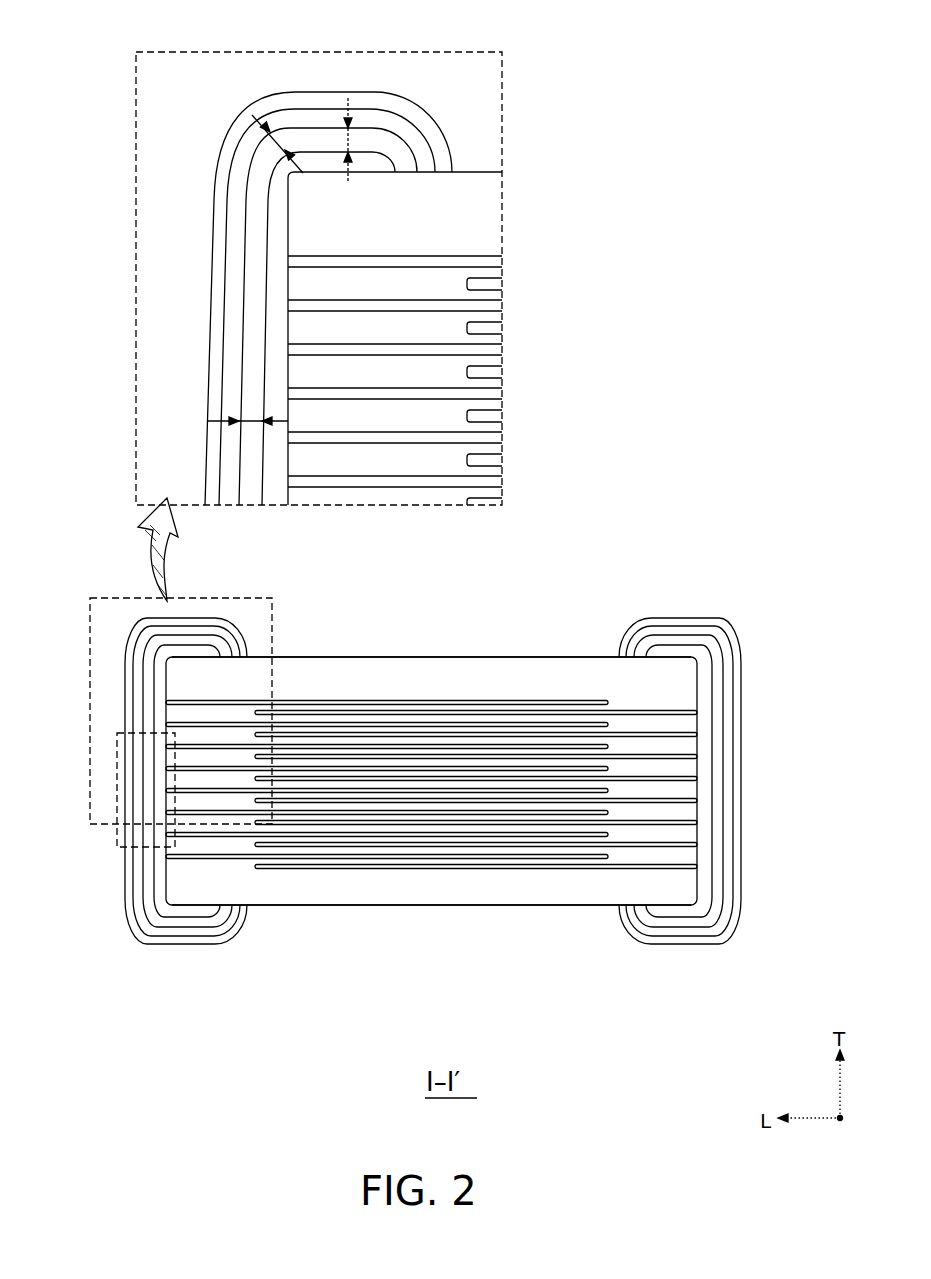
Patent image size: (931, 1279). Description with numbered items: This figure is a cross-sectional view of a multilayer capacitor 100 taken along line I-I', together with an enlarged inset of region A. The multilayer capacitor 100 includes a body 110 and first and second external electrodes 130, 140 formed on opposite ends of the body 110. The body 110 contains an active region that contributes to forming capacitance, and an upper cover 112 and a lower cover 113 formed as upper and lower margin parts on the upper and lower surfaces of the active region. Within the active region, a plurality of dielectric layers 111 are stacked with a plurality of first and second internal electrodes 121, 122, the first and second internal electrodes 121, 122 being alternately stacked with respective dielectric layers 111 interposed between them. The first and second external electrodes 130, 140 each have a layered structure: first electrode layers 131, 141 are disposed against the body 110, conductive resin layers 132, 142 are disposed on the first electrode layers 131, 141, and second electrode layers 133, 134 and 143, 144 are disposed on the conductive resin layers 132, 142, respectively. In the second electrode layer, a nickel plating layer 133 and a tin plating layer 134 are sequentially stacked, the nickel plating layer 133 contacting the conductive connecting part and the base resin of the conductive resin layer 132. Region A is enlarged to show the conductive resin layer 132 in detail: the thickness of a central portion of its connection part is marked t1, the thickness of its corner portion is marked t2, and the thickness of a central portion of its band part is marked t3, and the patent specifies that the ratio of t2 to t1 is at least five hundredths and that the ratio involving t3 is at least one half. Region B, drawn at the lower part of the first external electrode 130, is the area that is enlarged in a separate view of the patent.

The multilayer capacitor 100 is at (436, 797).
The body 110 is at (431, 782).
The dielectric layers 111 is at (431, 741).
The upper cover 112 is at (562, 683).
The lower cover 113 is at (507, 893).
The first internal electrodes 121 is at (360, 701).
The second internal electrodes 122 is at (447, 712).
The first external electrode 130 is at (182, 840).
The first electrode layer 131 is at (217, 830).
The conductive resin layer 132 is at (203, 922).
The nickel plating layer 133 is at (175, 930).
The tin plating layer 134 is at (148, 945).
The second external electrode 140 is at (687, 840).
The first electrode layer 141 is at (649, 830).
The conductive resin layer 142 is at (663, 922).
The second electrode layer 143 is at (695, 922).
The second electrode layer 144 is at (718, 938).
The region A is at (90, 686).
The region B is at (117, 795).
The thickness of a central portion of the connection part t1 is at (248, 417).
The thickness of a corner portion t2 is at (292, 138).
The thickness of a central portion of the band part t3 is at (355, 138).